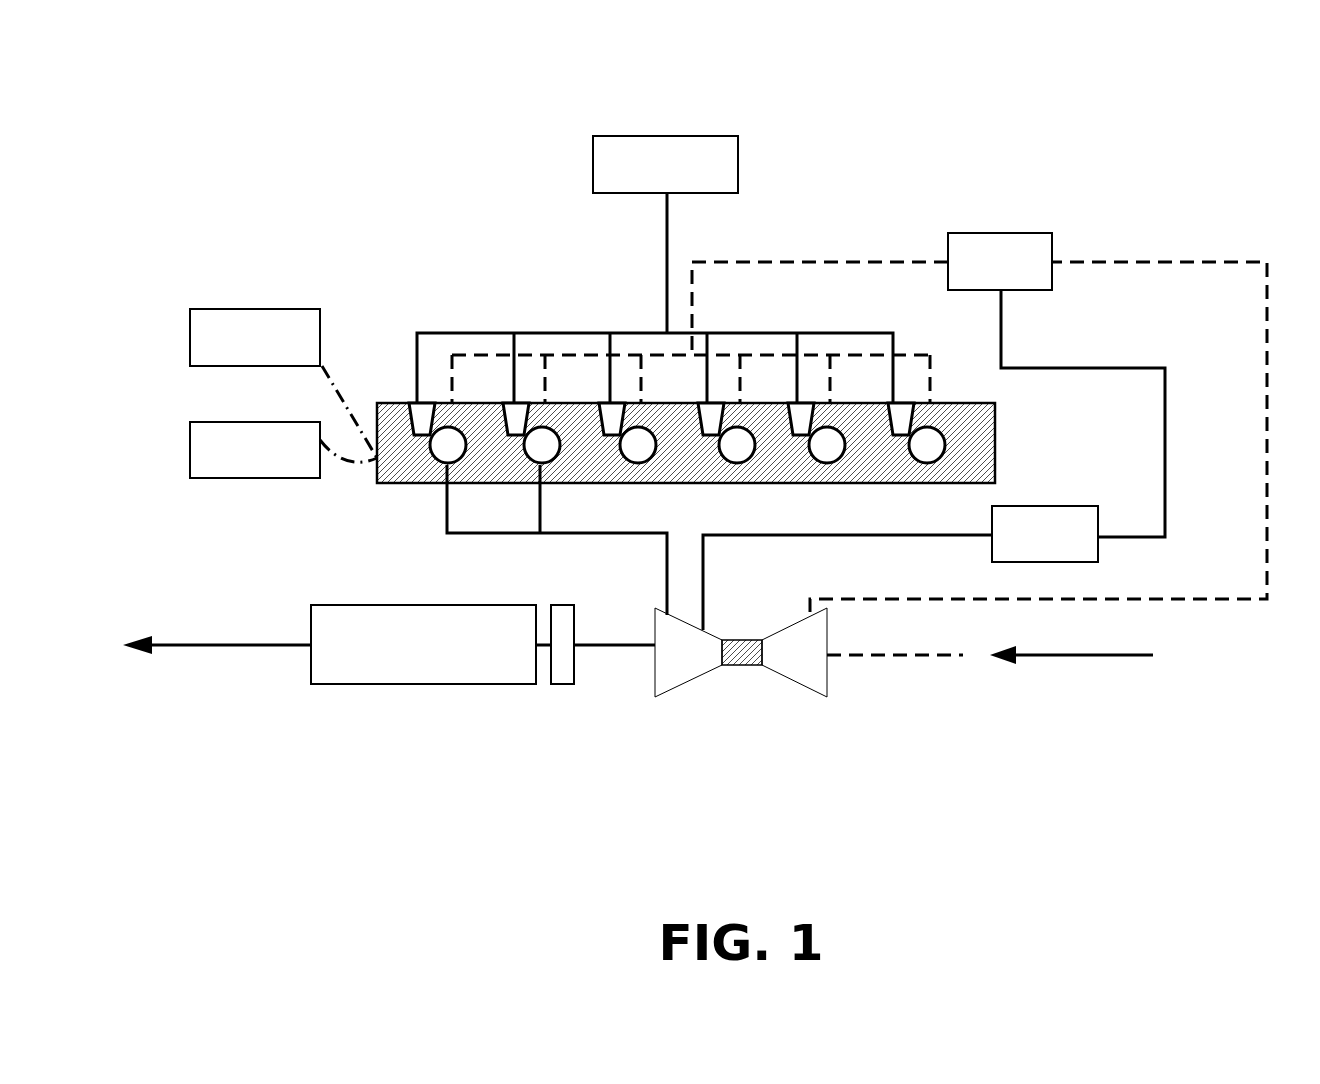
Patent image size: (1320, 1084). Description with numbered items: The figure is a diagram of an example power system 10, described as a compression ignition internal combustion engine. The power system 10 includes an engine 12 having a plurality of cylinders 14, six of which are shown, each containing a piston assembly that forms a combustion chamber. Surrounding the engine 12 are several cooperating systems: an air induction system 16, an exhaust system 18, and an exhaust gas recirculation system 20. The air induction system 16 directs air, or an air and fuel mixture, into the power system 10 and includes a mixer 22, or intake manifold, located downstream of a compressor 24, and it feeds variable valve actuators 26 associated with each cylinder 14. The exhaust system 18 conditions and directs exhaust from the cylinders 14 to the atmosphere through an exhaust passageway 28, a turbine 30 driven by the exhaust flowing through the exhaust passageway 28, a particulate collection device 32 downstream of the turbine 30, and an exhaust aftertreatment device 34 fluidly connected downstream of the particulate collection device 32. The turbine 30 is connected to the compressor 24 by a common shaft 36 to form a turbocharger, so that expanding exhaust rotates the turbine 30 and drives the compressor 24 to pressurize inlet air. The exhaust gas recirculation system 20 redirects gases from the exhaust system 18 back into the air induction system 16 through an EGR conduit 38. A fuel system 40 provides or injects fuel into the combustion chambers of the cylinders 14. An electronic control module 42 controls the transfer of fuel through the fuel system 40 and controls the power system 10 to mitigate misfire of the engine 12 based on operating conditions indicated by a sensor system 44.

The power system 10 is at (378, 226).
The engine 12 is at (387, 410).
The cylinders 14 is at (610, 440).
The air induction system 16 is at (773, 728).
The exhaust system 18 is at (198, 728).
The exhaust gas recirculation (EGR) system 20 is at (1060, 506).
The mixer 22 is at (1010, 233).
The compressor 24 is at (827, 675).
The variable valve actuators 26 is at (783, 402).
The exhaust passageway 28 is at (665, 575).
The turbine 30 is at (657, 675).
The particulate collection device 32 is at (565, 678).
The exhaust aftertreatment device 34 is at (358, 605).
The common shaft 36 is at (745, 645).
The EGR conduit 38 is at (962, 537).
The fuel system 40 is at (665, 136).
The electronic control module (ECM) 42 is at (283, 450).
The sensor system 44 is at (283, 383).